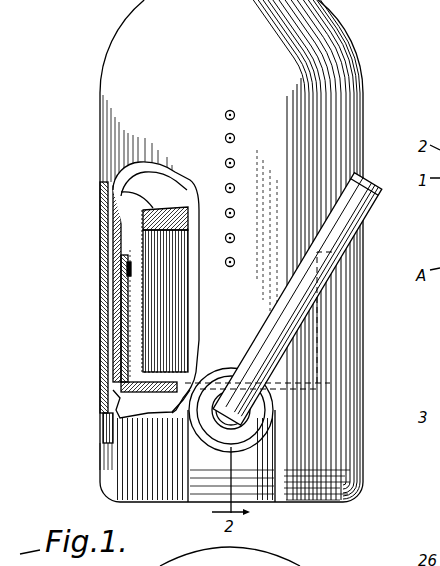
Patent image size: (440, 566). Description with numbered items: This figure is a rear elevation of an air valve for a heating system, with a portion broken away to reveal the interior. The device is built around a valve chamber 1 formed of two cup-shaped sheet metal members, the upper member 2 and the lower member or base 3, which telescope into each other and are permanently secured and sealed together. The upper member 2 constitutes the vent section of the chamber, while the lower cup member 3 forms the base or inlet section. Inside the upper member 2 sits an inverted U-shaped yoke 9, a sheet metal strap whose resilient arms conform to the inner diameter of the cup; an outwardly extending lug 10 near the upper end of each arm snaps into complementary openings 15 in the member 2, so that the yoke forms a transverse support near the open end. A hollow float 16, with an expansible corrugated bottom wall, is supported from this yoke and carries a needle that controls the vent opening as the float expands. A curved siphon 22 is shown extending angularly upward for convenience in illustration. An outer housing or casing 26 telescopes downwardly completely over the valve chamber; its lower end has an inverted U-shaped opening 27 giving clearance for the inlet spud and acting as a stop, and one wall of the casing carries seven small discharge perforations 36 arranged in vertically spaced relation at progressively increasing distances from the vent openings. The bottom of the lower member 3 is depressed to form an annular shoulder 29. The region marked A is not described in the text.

The outer housing or casing 26 is at (366, 83).
The discharge ports or perforations 36 is at (236, 162).
The float 16 is at (118, 178).
The valve chamber 1 is at (127, 200).
The upper cup-shaped member 2 is at (120, 220).
The complementary openings 15 is at (116, 265).
The outwardly extending lug 10 is at (126, 269).
The chamber A is at (118, 281).
The inverted U-shaped yoke 9 is at (120, 342).
The lower cup member or base 3 is at (107, 417).
The inverted U-shaped opening 27 is at (187, 457).
The annular shoulder 29 is at (262, 503).
The siphon 22 is at (367, 212).